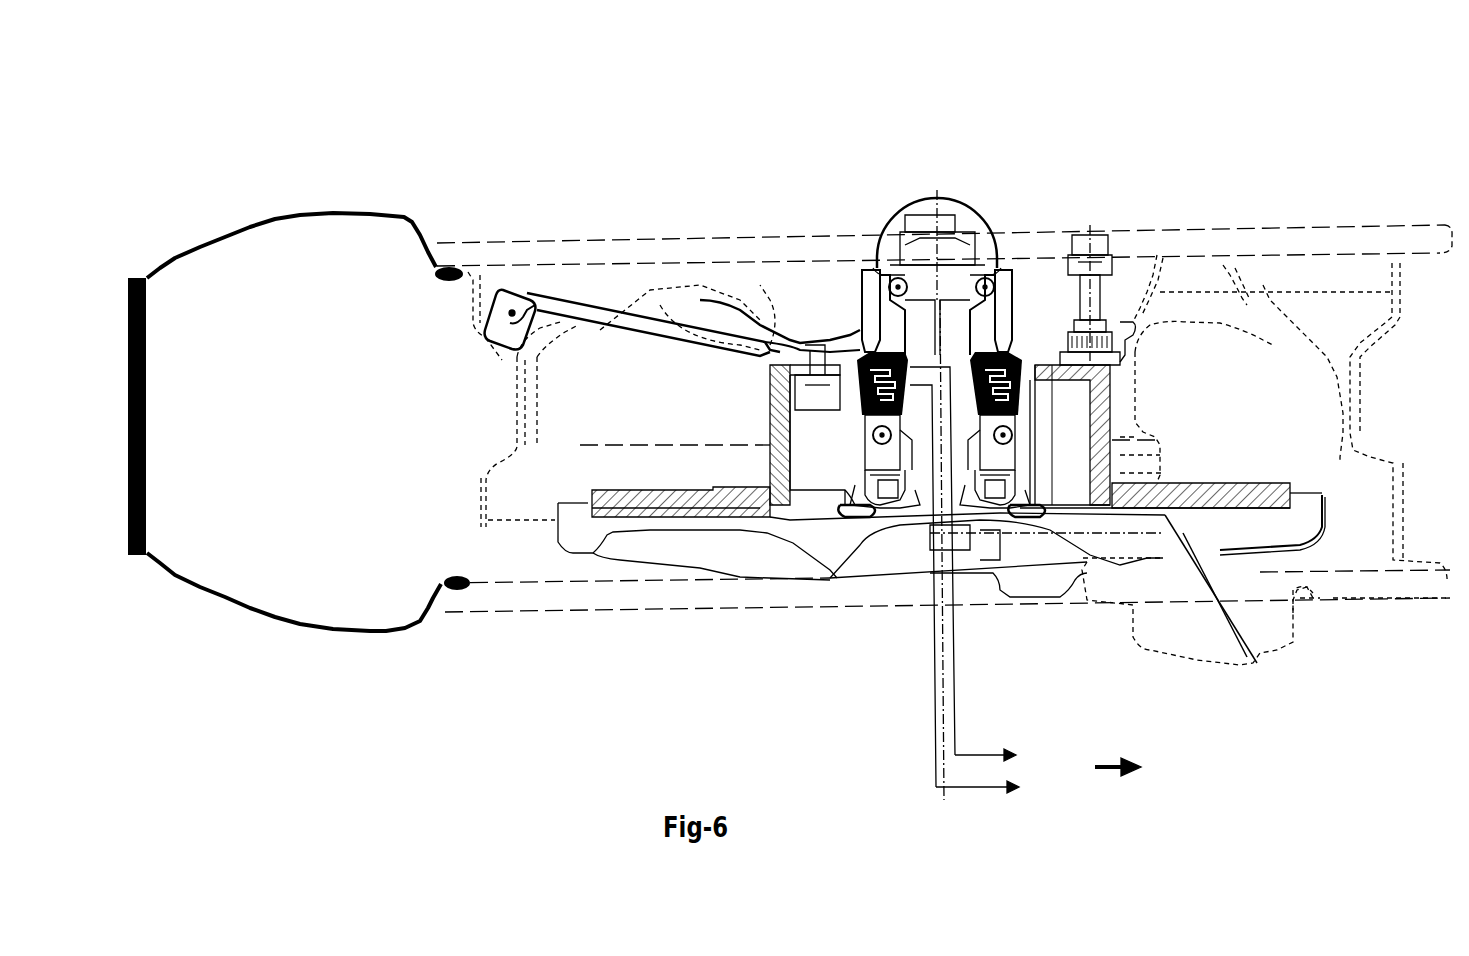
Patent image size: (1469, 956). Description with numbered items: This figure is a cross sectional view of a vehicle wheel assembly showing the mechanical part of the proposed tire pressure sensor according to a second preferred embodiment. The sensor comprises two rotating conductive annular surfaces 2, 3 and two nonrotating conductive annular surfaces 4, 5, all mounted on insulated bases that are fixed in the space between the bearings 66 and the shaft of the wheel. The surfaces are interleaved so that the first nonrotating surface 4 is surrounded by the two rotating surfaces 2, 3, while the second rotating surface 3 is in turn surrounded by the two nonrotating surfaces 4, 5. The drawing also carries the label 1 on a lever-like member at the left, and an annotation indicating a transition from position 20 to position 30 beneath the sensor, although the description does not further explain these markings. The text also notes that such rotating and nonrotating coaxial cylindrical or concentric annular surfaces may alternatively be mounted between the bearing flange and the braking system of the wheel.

The lever 1 is at (507, 300).
The rotating conductive annular surface 2 is at (878, 350).
The bearings 66 is at (897, 283).
The first nonrotating conductive annular surface 4 is at (1010, 400).
The second rotating conductive annular surface 3 is at (895, 387).
The second nonrotating conductive annular surface 5 is at (983, 403).
The position 20 is at (1013, 770).
The position 30 is at (1143, 768).